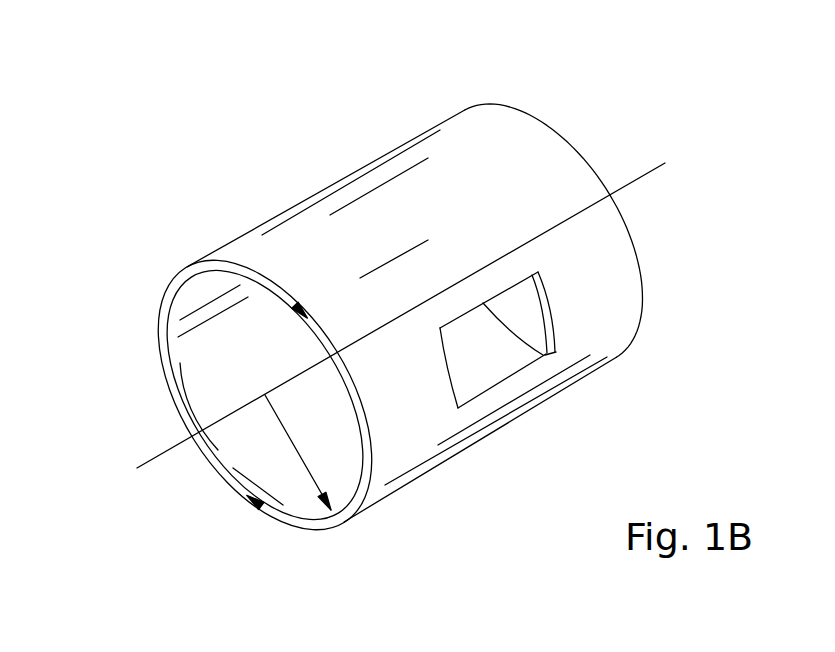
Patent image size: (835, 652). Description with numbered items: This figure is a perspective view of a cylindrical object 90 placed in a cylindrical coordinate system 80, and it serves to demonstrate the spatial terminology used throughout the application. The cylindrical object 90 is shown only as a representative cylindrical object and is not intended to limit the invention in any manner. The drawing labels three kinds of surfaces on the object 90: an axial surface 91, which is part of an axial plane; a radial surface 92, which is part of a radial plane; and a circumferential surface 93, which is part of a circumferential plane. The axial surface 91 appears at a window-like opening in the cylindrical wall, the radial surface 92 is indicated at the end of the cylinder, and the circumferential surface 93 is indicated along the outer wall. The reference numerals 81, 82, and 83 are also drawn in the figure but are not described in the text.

The cylindrical coordinate system 80 is at (575, 120).
The longitudinal axis 81 is at (150, 463).
The radius 82 is at (303, 460).
The end rim 83 is at (165, 290).
The object 90 is at (442, 108).
The axial surface 91 is at (521, 370).
The radial surface 92 is at (283, 518).
The circumferential surface 93 is at (377, 205).